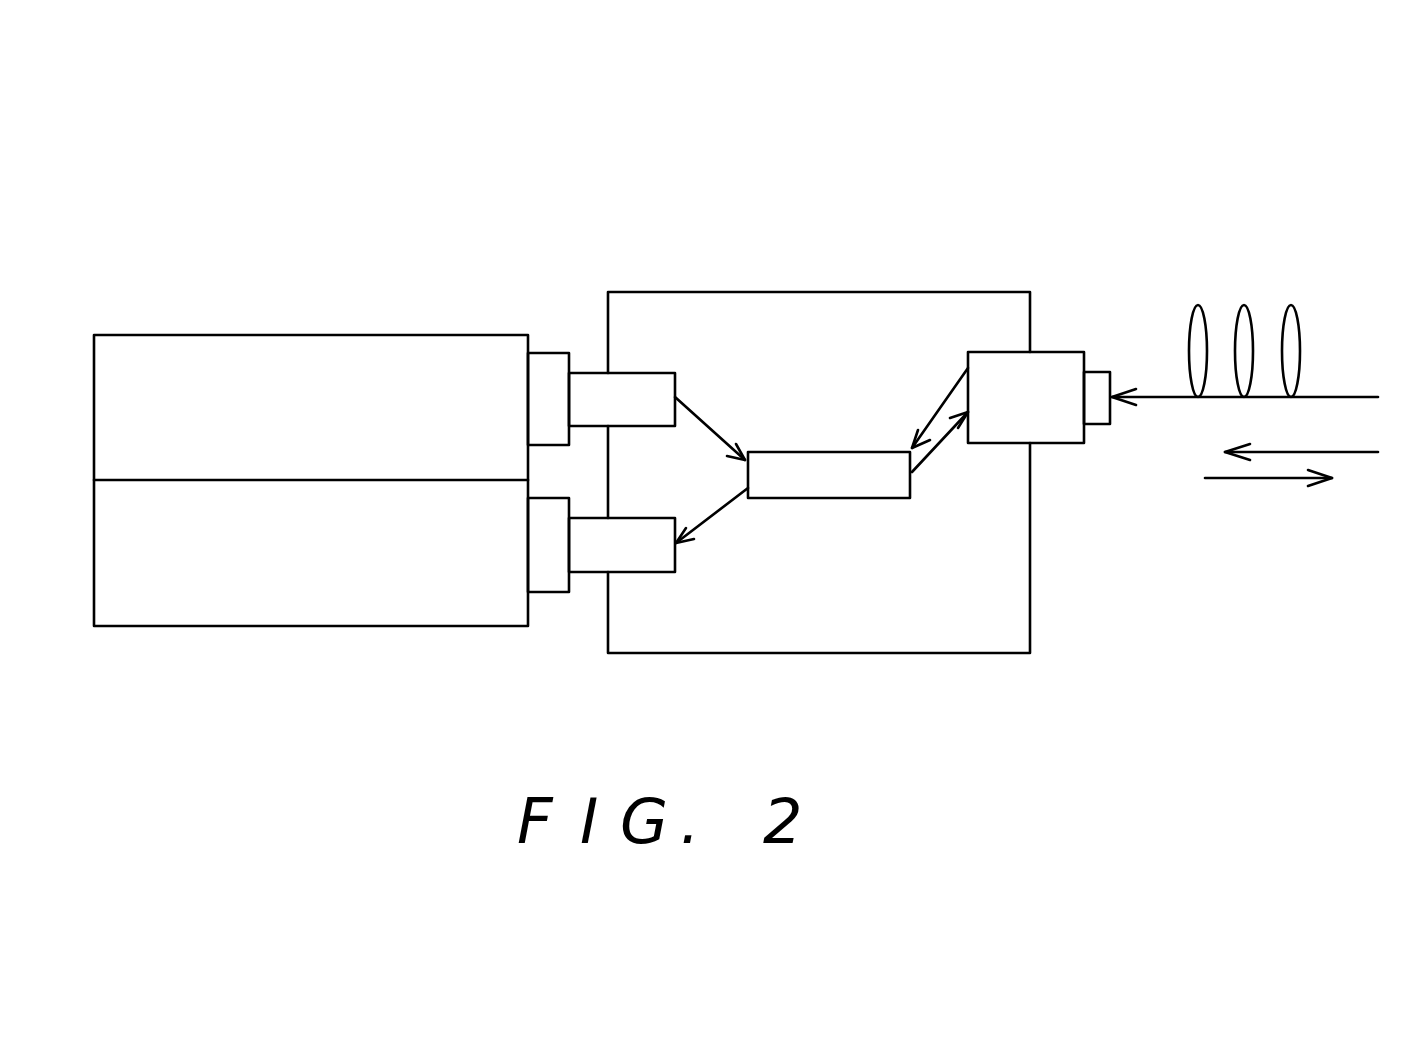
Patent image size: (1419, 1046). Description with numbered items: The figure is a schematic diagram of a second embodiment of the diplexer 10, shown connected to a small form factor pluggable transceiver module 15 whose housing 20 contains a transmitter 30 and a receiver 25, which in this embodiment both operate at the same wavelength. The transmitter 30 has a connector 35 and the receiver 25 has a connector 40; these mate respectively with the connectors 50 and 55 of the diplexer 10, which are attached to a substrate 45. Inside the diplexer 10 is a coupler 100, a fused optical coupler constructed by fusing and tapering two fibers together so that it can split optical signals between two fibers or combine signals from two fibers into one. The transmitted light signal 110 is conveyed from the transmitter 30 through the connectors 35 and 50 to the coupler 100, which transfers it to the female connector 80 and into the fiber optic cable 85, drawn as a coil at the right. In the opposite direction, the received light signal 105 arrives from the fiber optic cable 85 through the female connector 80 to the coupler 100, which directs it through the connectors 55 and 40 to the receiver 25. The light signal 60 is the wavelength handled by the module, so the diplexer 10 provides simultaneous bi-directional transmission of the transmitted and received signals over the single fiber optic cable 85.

The diplexer 10 is at (855, 133).
The small form factor pluggable transceiver module 15 is at (287, 160).
The transceiver housing 20 is at (311, 488).
The receiver 25 is at (153, 608).
The transmitter 30 is at (153, 360).
The connector of the transmitter 35 is at (553, 372).
The connector of the receiver 40 is at (557, 573).
The substrate 45 is at (763, 292).
The connector 50 is at (595, 383).
The connector 55 is at (590, 573).
The light signal λ1 60 is at (819, 426).
The female connector 80 is at (1055, 445).
The fiber optic cable 85 is at (1300, 343).
The coupler 100 is at (825, 498).
The received light signal λ1R 105 is at (700, 528).
The transmitted light signal λ1T 110 is at (705, 417).